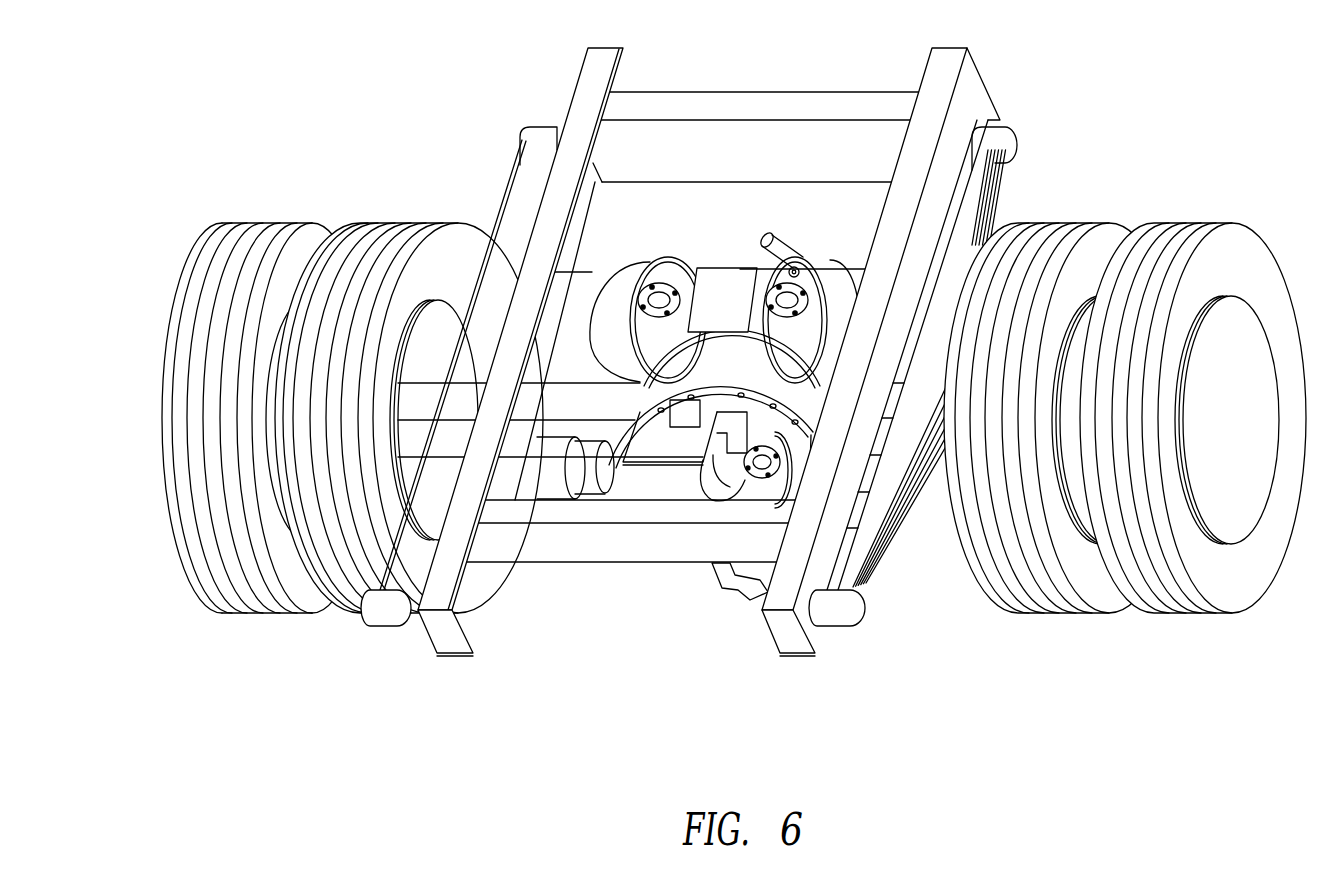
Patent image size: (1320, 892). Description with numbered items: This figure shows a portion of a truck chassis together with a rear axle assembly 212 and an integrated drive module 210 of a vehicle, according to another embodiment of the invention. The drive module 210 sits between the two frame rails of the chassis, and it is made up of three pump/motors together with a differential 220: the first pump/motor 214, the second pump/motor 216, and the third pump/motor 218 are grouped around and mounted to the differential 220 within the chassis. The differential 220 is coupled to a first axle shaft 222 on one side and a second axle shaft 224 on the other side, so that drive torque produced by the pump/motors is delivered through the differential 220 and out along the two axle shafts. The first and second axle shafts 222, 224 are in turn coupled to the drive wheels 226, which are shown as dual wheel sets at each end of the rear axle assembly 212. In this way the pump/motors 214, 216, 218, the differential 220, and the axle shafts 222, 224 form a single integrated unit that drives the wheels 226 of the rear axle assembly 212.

The integrated drive module 210 is at (645, 215).
The rear axle assembly 212 is at (276, 163).
The first pump/motor 214 is at (847, 278).
The second pump/motor 216 is at (633, 273).
The third pump/motor 218 is at (757, 484).
The differential 220 is at (668, 393).
The first axle shaft 222 is at (430, 403).
The second axle shaft 224 is at (948, 265).
The drive wheels 226 is at (257, 592).